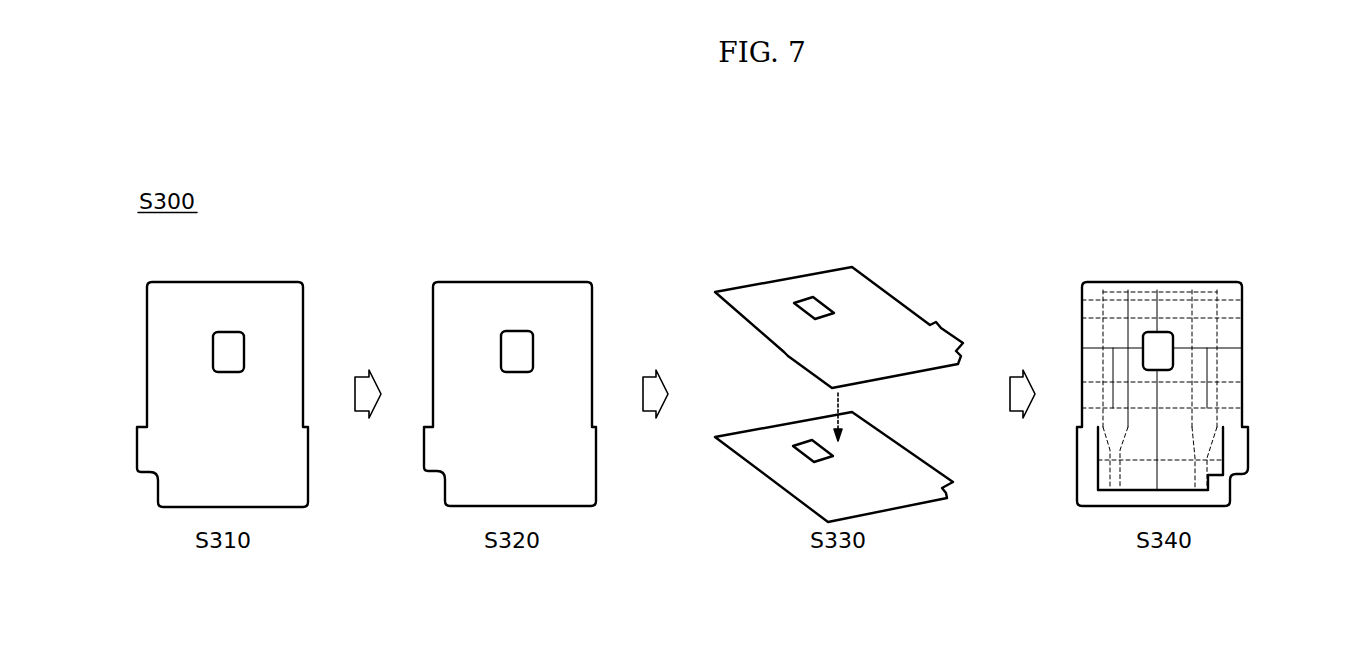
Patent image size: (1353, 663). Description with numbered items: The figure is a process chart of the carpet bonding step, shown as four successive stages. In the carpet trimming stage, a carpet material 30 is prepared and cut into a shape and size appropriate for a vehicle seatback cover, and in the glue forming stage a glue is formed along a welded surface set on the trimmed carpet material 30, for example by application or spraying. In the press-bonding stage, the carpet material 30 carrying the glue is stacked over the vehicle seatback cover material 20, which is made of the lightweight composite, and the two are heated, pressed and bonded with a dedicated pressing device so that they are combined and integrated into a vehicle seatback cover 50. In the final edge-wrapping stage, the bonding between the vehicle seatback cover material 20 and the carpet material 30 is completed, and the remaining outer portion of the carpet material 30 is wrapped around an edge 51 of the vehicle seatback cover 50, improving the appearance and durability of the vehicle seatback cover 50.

The carpet material 30 is at (228, 281).
The vehicle seatback cover material 20 is at (890, 433).
The vehicle seatback cover 50 is at (1157, 281).
The edge 51 is at (1242, 449).